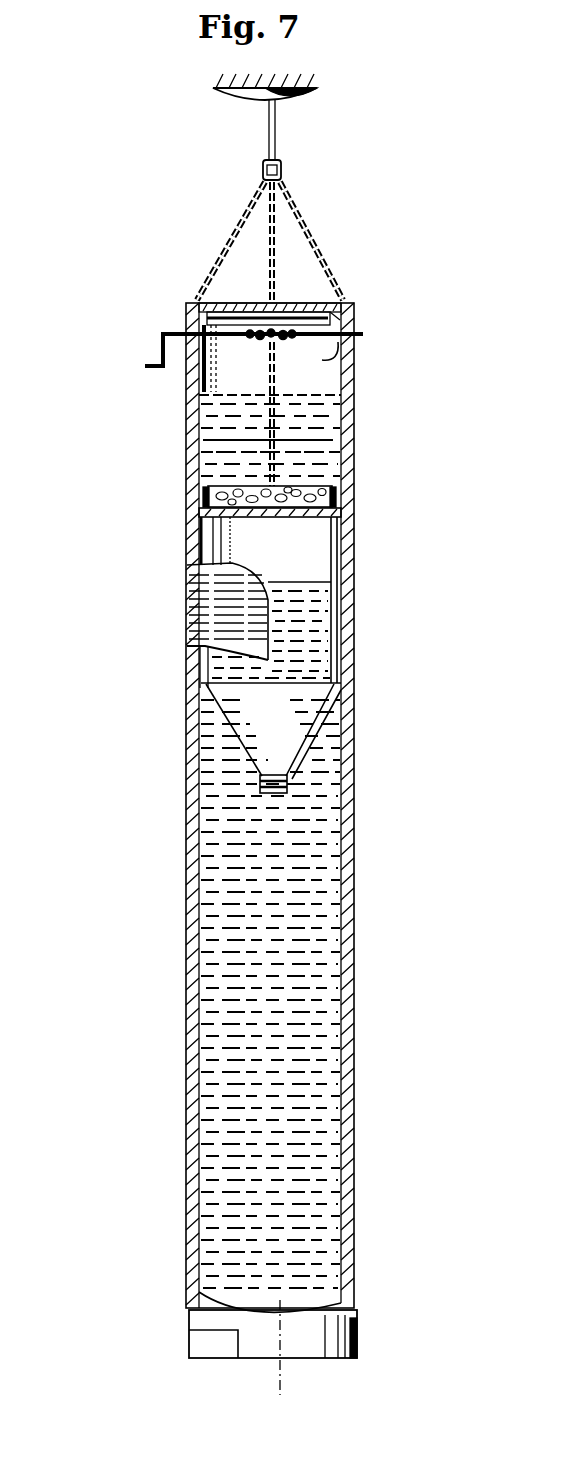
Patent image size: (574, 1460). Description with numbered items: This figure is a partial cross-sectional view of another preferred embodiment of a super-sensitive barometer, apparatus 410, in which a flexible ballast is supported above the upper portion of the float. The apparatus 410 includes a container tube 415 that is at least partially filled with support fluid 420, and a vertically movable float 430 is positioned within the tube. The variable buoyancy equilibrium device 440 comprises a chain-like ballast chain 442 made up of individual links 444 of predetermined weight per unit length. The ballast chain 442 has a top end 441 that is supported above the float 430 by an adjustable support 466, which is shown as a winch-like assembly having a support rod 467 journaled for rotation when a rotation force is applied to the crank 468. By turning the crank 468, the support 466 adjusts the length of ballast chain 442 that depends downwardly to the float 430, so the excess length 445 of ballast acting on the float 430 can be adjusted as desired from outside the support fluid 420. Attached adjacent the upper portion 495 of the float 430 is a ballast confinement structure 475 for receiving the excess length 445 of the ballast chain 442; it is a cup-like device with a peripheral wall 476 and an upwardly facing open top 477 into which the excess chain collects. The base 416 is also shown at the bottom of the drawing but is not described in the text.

The apparatus 410 is at (143, 707).
The container tube 415 is at (191, 528).
The bottom base 416 is at (335, 1338).
The support fluid 420 is at (313, 953).
The float 430 is at (228, 732).
The variable buoyancy equilibrium device 440 is at (246, 373).
The top end 441 is at (292, 352).
The ballast chain 442 is at (200, 443).
The links 444 is at (280, 457).
The excess length 445 is at (240, 487).
The adjustable support 466 is at (176, 325).
The support rod 467 is at (352, 358).
The crank 468 is at (160, 340).
The ballast confinement structure 475 is at (197, 497).
The peripheral wall 476 is at (335, 497).
The open top 477 is at (331, 480).
The upper portion 495 is at (344, 522).